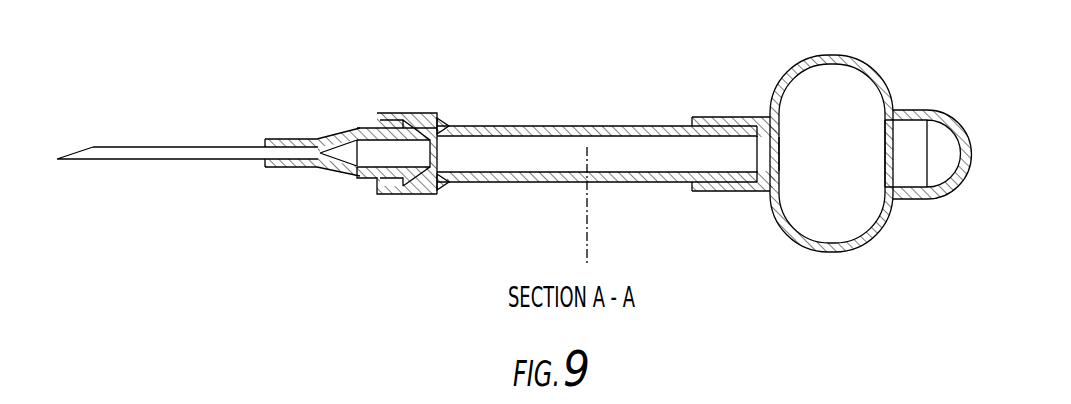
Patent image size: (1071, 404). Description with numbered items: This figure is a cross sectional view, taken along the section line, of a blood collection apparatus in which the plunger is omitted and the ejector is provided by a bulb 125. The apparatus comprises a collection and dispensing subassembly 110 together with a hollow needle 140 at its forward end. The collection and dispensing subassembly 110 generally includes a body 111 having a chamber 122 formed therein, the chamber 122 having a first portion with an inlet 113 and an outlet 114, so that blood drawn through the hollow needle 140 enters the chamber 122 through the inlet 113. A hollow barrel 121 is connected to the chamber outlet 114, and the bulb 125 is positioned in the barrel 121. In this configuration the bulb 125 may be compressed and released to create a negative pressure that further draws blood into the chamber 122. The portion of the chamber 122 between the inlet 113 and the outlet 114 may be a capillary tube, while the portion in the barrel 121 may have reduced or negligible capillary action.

The collection and dispensing subassembly 110 is at (514, 162).
The body 111 is at (563, 127).
The inlet 113 is at (361, 129).
The outlet 114 is at (453, 145).
The barrel 121 is at (672, 126).
The chamber 122 is at (587, 162).
The bulb 125 is at (871, 238).
The hollow needle 140 is at (224, 159).